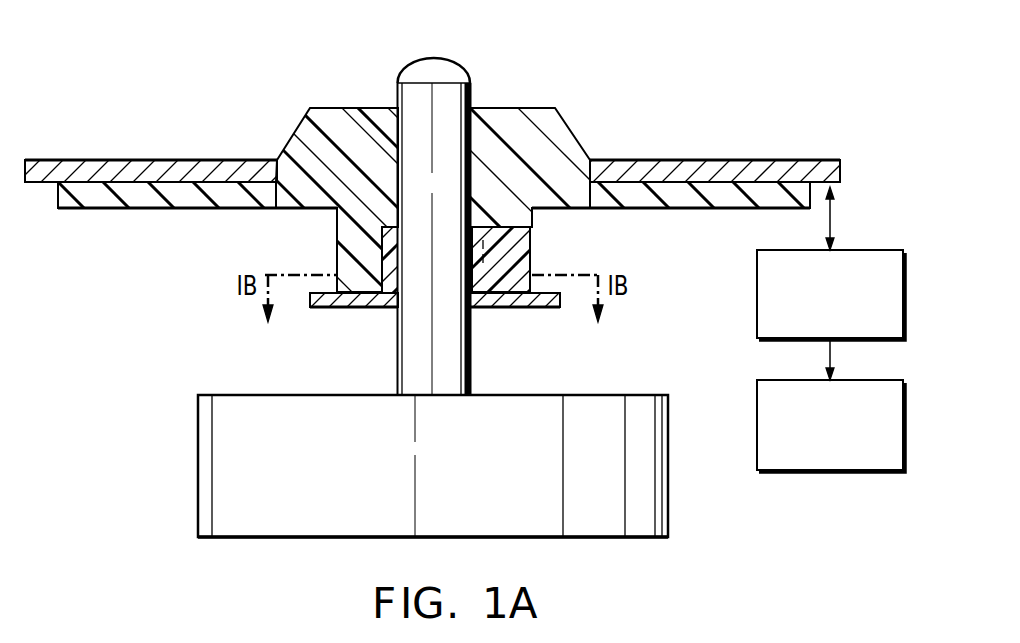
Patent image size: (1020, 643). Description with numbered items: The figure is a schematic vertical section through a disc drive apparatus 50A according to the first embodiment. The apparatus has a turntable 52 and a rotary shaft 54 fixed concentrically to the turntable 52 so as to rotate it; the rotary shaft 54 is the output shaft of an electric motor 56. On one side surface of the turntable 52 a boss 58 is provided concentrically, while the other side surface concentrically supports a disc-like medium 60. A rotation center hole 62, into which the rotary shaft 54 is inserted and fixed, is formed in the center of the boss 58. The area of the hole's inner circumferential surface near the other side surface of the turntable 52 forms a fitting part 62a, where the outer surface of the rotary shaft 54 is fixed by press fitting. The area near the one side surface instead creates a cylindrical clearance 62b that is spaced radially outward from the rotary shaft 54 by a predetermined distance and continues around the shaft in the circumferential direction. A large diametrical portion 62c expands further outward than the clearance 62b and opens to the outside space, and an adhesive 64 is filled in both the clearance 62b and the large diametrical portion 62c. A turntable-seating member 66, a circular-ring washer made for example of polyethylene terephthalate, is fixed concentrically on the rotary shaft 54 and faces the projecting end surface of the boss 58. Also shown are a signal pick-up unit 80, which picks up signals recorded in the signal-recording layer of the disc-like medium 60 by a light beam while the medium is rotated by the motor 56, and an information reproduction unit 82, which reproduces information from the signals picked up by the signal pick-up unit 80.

The disc drive apparatus 50A is at (432, 157).
The turntable 52 is at (100, 208).
The rotary shaft 54 is at (428, 58).
The electric motor 56 is at (680, 474).
The boss 58 is at (322, 291).
The disc-like medium 60 is at (768, 160).
The rotation center hole 62 is at (394, 106).
The fitting part 62a is at (478, 120).
The clearance 62b is at (378, 308).
The large diametrical portion 62c is at (500, 232).
The adhesive 64 is at (518, 308).
The turntable-seating member 66 is at (495, 308).
The signal pick-up unit 80 is at (884, 250).
The information reproduction unit 82 is at (885, 471).